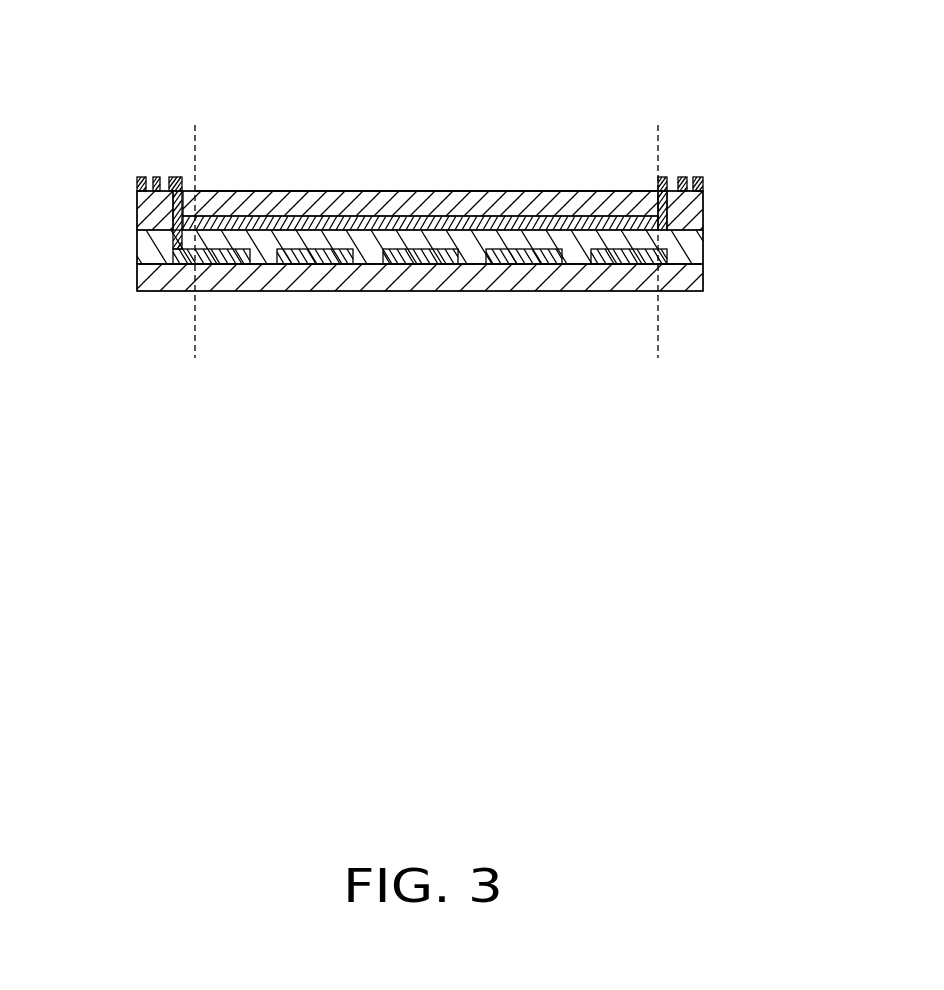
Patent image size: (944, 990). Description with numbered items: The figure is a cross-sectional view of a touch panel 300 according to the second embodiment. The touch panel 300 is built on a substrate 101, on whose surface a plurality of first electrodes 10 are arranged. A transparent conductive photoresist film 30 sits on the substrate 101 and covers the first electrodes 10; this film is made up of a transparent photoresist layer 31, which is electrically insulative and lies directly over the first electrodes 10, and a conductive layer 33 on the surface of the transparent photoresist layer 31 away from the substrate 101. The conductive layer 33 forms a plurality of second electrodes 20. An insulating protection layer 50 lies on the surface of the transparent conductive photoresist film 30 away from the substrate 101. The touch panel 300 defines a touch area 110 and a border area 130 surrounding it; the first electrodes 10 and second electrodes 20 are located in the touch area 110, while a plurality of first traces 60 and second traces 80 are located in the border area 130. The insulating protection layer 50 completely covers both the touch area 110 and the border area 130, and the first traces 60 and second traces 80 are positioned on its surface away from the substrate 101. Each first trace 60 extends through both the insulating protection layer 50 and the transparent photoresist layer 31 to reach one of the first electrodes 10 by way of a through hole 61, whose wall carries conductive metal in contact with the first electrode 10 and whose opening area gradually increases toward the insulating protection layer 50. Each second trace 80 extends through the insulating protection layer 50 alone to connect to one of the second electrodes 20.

The touch panel 300 is at (438, 30).
The border area 130 is at (154, 112).
The touch area 110 is at (447, 120).
The first electrodes 10 is at (630, 264).
The substrate 101 is at (690, 279).
The transparent conductive photoresist film 30 is at (778, 220).
The conductive layer 33 is at (672, 230).
The transparent photoresist layer 31 is at (685, 250).
The insulating protection layer 50 is at (690, 204).
The second electrodes 20 is at (430, 217).
The through hole 61 is at (173, 209).
The first traces 60 is at (177, 177).
The second traces 80 is at (662, 177).